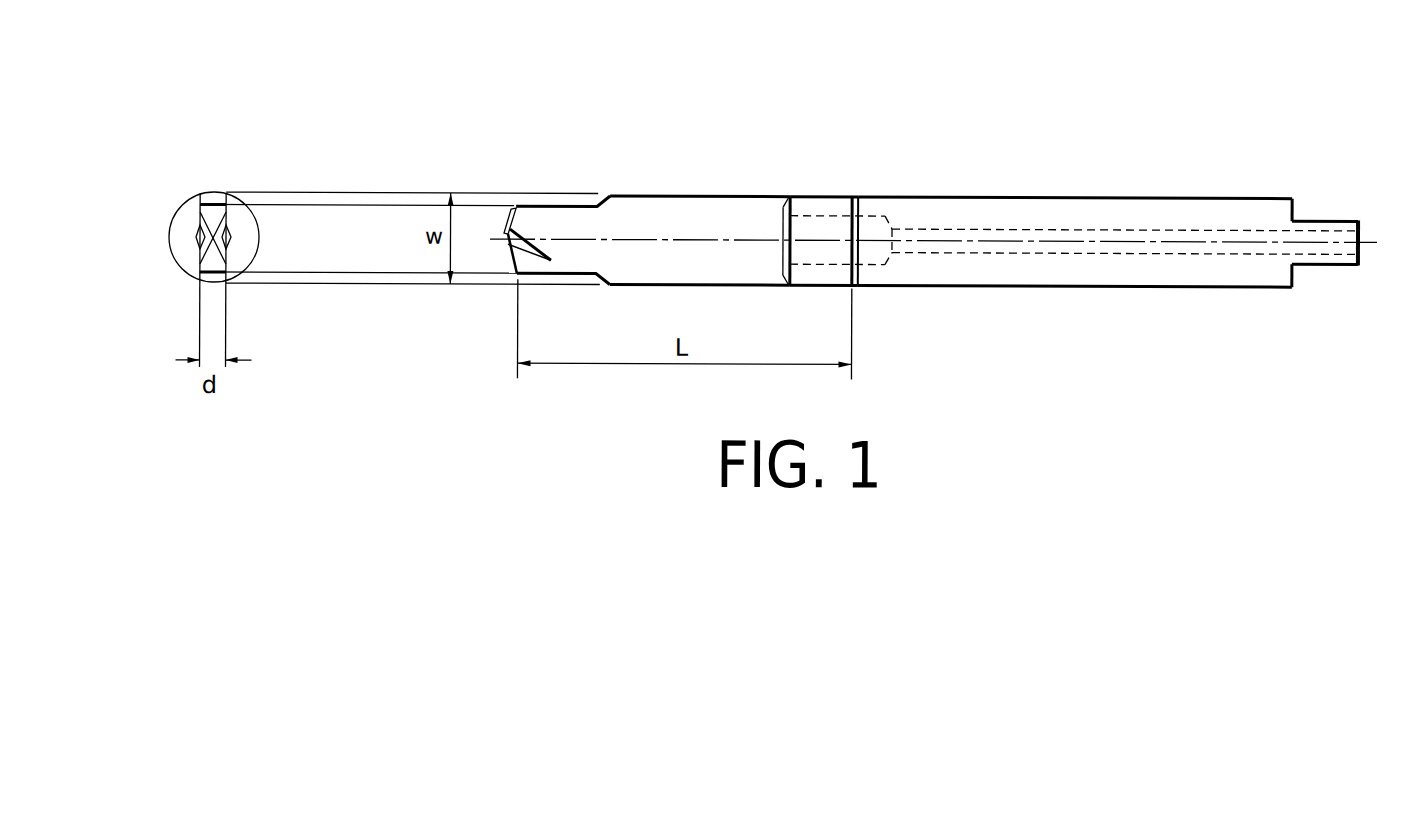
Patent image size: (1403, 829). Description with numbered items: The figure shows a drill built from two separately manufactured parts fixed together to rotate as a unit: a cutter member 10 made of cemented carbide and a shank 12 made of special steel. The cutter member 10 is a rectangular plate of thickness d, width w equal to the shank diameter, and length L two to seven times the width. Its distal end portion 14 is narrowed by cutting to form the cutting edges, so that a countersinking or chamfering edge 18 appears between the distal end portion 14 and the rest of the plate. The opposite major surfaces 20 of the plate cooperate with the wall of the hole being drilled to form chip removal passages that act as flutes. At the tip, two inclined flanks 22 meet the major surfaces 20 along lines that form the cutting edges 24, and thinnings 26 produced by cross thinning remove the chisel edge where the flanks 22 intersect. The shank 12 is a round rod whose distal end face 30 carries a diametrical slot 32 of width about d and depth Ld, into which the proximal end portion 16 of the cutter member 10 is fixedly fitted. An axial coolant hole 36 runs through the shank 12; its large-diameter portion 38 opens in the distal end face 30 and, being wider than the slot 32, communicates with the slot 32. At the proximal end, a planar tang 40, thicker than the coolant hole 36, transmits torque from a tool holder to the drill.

The cutter member 10 is at (603, 372).
The shank 12 is at (1197, 273).
The distal end portion 14 is at (547, 180).
The proximal end portion 16 is at (727, 165).
The countersinking or chamfering edge 18 is at (598, 196).
The major surfaces 20 is at (612, 267).
The flanks 22 is at (222, 208).
The cutting edges 24 is at (200, 212).
The thinnings 26 is at (200, 229).
The distal end face 30 is at (782, 266).
The slot 32 is at (820, 275).
The coolant hole 36 is at (1070, 251).
The large-diameter portion 38 is at (870, 216).
The tang 40 is at (1324, 261).